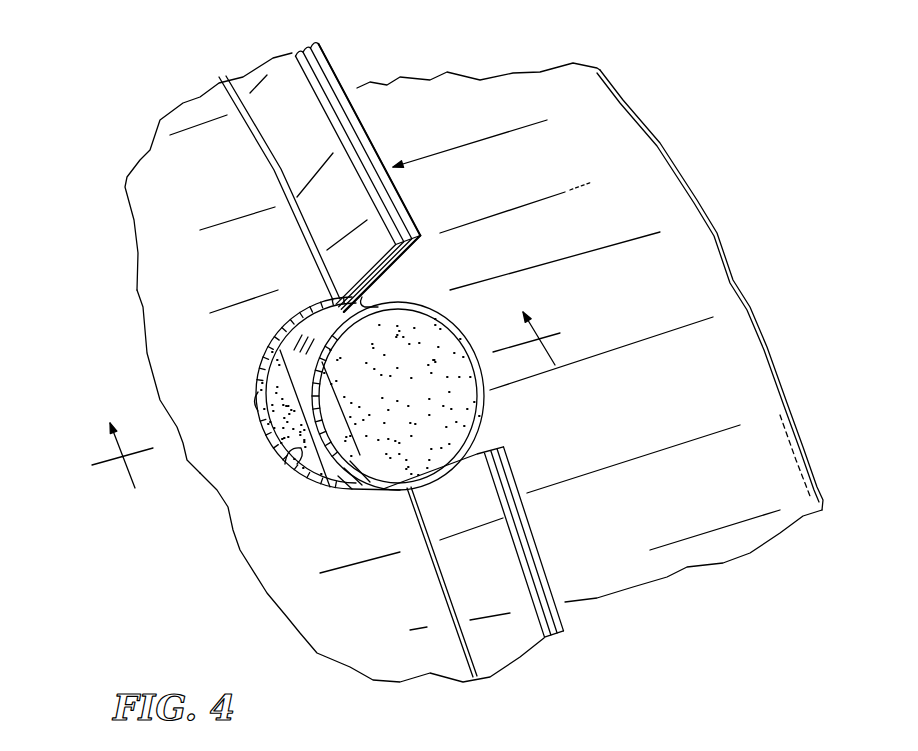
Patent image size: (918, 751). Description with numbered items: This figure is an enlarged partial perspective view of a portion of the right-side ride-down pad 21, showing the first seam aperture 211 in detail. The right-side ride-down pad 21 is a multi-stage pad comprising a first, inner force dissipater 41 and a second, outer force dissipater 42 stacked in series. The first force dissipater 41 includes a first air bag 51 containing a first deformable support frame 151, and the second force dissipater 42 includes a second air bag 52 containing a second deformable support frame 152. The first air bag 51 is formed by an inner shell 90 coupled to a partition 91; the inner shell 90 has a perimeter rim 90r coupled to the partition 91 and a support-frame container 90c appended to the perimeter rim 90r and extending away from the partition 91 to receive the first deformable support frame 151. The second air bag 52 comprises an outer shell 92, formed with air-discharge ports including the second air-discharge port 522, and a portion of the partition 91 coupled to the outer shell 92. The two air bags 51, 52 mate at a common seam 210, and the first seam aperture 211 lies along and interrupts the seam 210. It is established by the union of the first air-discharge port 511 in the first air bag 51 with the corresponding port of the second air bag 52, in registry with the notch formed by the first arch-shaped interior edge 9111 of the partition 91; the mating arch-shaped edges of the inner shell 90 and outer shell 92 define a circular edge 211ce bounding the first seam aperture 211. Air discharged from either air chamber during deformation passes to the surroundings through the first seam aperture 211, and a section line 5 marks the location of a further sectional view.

The right-side ride-down pad 21 is at (721, 214).
The first force dissipater 41 is at (430, 80).
The second force dissipater 42 is at (148, 152).
The first air bag 51 is at (717, 360).
The second air bag 52 is at (297, 570).
The inner shell 90 is at (667, 137).
The support-frame container 90c is at (745, 396).
The perimeter rim 90r is at (380, 137).
The partition 91 is at (317, 75).
The outer shell 92 is at (140, 310).
The first deformable support frame 151 is at (458, 412).
The second deformable support frame 152 is at (278, 442).
The seam 210 is at (293, 50).
The first seam aperture 211 is at (285, 315).
The circular edge 211ce is at (478, 380).
The first air-discharge port 511 is at (403, 311).
The second air-discharge port 522 is at (262, 390).
The first arch-shaped interior edge 9111 is at (398, 272).
The section line 5 is at (314, 389).